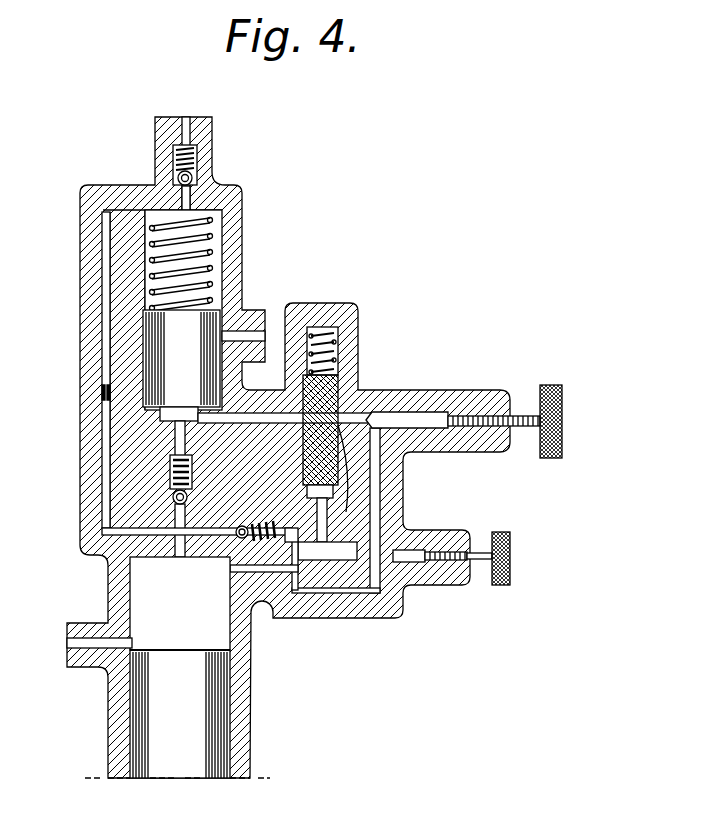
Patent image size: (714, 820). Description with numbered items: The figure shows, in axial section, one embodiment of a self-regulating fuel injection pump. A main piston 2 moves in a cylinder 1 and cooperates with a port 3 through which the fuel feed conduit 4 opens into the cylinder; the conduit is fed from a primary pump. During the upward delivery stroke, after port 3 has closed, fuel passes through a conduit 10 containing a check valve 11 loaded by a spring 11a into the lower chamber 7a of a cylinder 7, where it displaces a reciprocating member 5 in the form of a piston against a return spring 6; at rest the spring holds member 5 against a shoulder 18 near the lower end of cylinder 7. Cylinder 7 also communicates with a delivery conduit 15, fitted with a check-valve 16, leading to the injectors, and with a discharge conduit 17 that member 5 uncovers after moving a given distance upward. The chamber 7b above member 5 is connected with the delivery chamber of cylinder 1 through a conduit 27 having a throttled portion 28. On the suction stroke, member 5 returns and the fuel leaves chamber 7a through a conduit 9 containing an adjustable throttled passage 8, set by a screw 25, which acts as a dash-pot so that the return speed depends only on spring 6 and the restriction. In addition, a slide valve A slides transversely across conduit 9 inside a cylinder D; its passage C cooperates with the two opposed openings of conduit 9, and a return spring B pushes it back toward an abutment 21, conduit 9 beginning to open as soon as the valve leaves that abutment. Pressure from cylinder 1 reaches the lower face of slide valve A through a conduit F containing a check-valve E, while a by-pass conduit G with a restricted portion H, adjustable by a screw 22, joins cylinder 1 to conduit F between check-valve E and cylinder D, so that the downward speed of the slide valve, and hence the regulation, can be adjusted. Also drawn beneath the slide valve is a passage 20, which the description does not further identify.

The cylinder 1 is at (230, 634).
The main piston 2 is at (190, 712).
The port 3 is at (132, 647).
The fuel feed conduit 4 is at (97, 645).
The reciprocating member 5 is at (167, 338).
The return spring 6 is at (158, 277).
The cylinder 7 is at (148, 300).
The lower chamber 7a is at (170, 413).
The chamber 7b is at (152, 245).
The throttled passage 8 is at (373, 416).
The conduit 9 is at (246, 417).
The conduit 10 is at (178, 556).
The check valve 11 is at (174, 495).
The spring 11a is at (170, 476).
The delivery conduit 15 is at (186, 197).
The check-valve 16 is at (189, 175).
The discharge conduit 17 is at (244, 338).
The shoulder 18 is at (176, 425).
The passage 20 is at (380, 515).
The abutment 21 is at (322, 341).
The screw 22 is at (445, 561).
The screw 25 is at (523, 415).
The conduit 27 is at (105, 367).
The throttled portion 28 is at (104, 397).
The slide valve A is at (340, 462).
The return spring B is at (324, 333).
The passage C is at (340, 437).
The cylinder D is at (342, 483).
The check-valve E is at (210, 552).
The conduit F is at (228, 570).
The by-pass conduit G is at (294, 592).
The restricted portion H is at (294, 545).